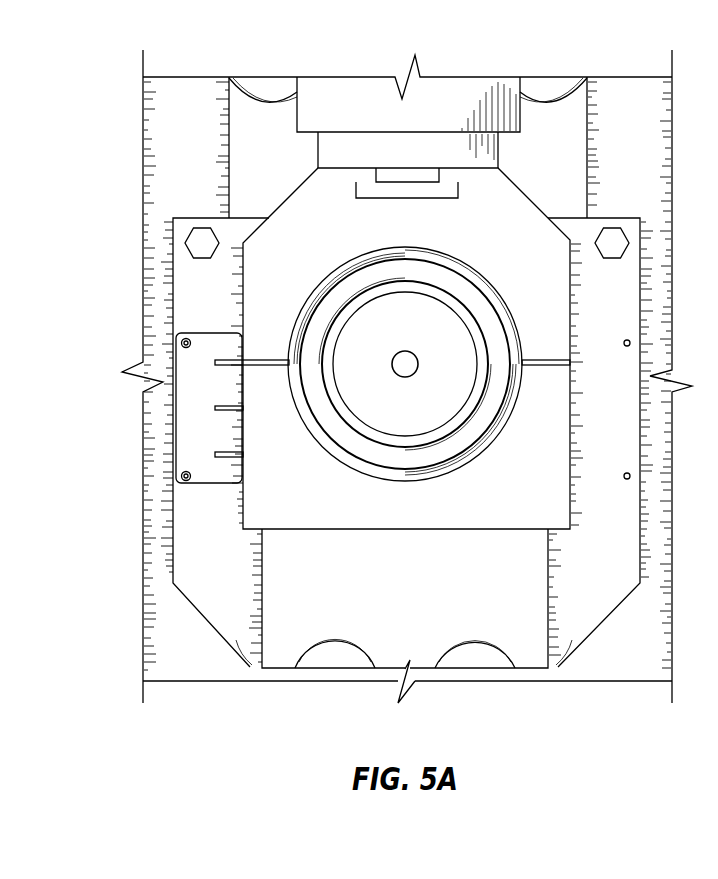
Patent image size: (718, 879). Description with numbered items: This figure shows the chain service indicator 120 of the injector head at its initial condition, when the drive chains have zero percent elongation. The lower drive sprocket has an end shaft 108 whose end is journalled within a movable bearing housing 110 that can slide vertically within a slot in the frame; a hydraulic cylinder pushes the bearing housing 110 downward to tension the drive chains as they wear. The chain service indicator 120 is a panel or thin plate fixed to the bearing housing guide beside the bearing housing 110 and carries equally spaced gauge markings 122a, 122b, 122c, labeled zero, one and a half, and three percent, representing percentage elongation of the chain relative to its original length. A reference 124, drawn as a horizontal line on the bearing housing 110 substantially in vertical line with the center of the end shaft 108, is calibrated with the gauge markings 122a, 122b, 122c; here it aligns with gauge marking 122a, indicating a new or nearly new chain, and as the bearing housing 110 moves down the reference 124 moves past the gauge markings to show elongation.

The end shaft 108 is at (430, 420).
The bearing housing 110 is at (352, 512).
The chain service indicator 120 is at (222, 352).
The gauge marking 122a is at (173, 360).
The gauge marking 122b is at (173, 393).
The gauge marking 122c is at (173, 453).
The reference 124 is at (557, 358).